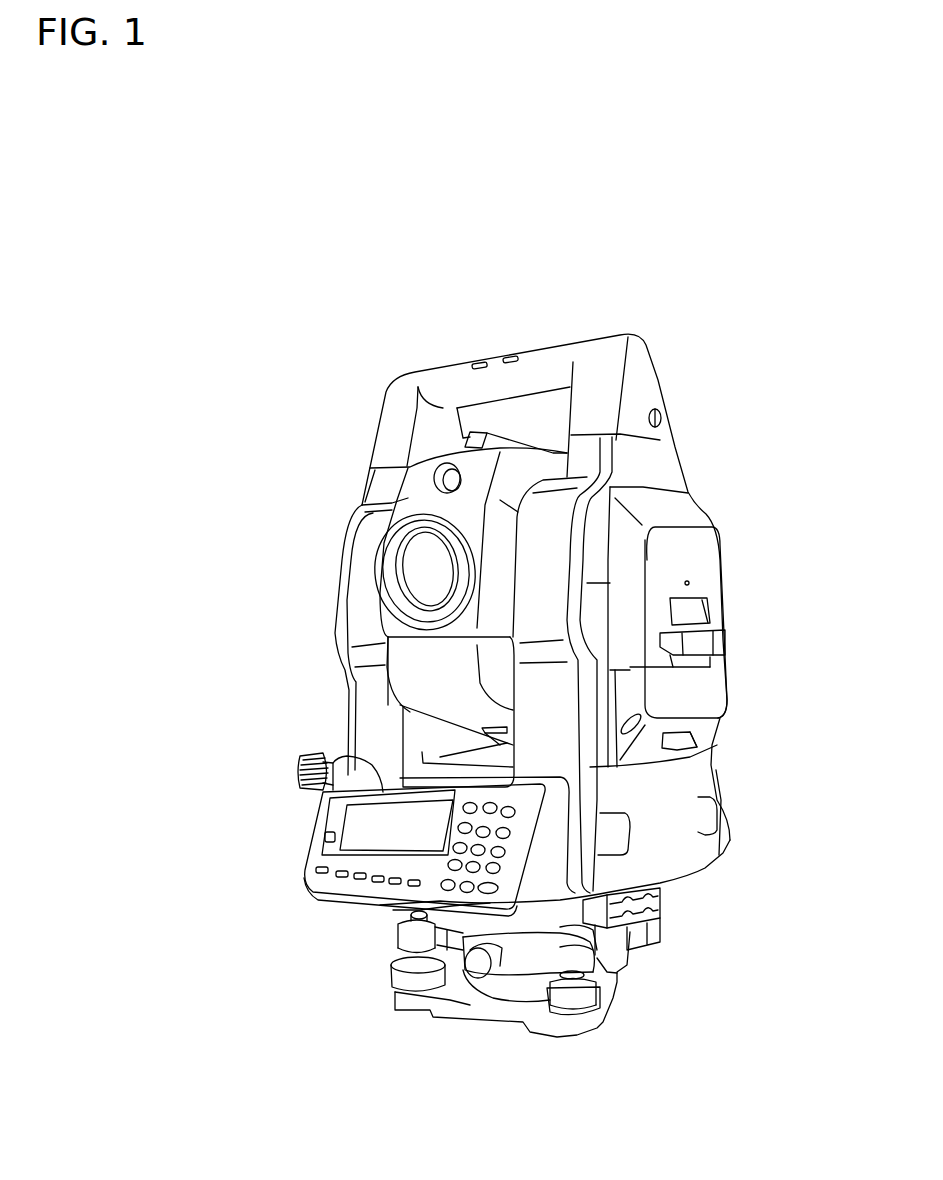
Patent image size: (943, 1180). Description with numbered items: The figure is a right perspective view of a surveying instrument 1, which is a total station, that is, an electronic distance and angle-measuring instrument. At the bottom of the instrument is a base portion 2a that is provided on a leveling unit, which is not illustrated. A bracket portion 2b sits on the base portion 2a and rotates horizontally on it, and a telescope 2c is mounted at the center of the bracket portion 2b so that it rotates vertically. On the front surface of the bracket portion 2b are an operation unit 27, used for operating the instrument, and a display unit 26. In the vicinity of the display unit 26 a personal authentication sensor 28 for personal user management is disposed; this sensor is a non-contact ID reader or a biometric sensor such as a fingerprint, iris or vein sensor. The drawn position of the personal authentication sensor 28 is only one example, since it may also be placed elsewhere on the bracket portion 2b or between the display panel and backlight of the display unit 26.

The surveying instrument 1 is at (672, 303).
The base portion 2a is at (660, 940).
The bracket portion 2b is at (712, 585).
The telescope 2c is at (410, 570).
The display unit 26 is at (367, 823).
The operation unit 27 is at (474, 806).
The personal authentication sensor 28 is at (322, 838).